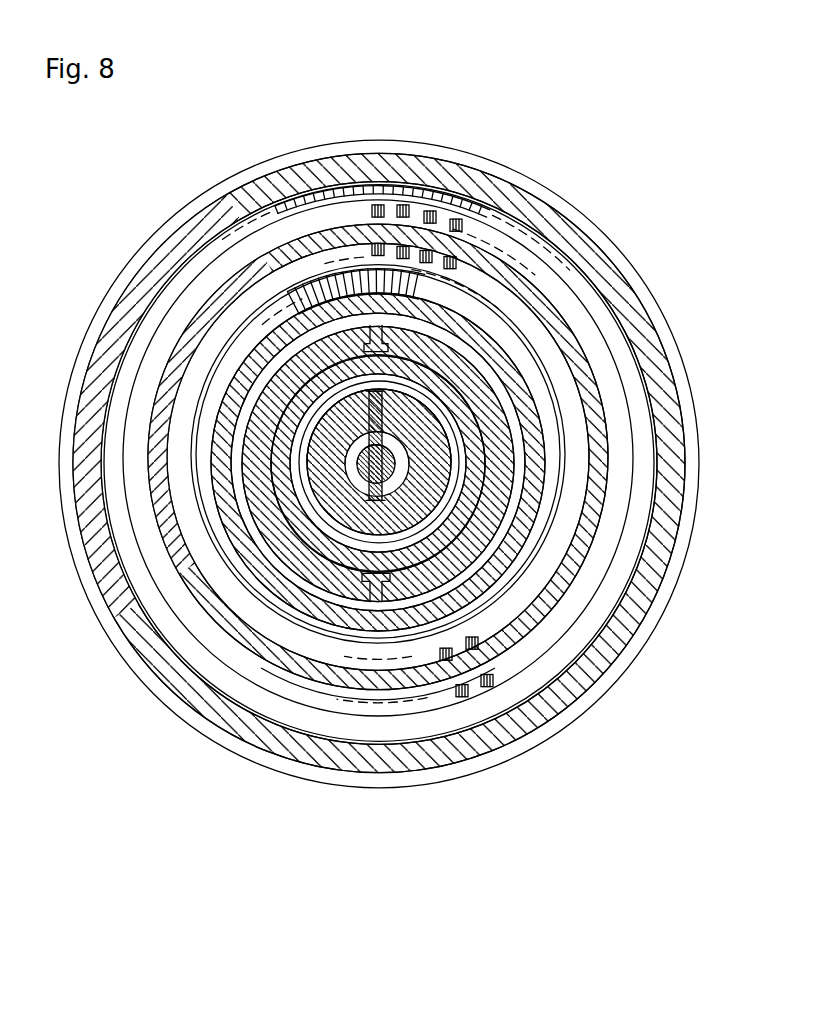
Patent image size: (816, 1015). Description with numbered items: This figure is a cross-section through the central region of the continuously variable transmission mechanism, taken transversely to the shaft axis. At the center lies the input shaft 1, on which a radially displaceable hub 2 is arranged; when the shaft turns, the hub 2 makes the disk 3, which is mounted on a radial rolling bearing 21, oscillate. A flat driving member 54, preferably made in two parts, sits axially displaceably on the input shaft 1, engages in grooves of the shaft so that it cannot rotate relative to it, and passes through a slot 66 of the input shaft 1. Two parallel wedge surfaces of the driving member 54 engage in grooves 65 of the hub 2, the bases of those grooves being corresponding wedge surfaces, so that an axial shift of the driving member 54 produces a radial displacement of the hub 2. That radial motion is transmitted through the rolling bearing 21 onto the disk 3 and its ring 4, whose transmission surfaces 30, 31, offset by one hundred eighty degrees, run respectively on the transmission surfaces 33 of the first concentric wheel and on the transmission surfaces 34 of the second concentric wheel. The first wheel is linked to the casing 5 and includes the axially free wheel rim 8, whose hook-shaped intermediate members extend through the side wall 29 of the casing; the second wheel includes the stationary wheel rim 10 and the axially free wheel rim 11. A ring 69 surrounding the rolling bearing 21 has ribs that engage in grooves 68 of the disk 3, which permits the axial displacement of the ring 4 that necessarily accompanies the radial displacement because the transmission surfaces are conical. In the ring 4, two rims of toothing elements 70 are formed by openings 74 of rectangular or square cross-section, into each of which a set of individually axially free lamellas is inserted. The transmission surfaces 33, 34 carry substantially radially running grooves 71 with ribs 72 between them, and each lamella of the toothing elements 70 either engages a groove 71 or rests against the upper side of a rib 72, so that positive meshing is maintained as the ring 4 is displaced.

The input shaft 1 is at (367, 466).
The hub 2 is at (237, 388).
The disk 3 is at (305, 570).
The ring 4 is at (522, 290).
The casing 5 is at (228, 715).
The axially free wheel rim 8 is at (398, 735).
The stationary wheel rim 10 is at (262, 510).
The axially free wheel rim 11 is at (215, 530).
The radial rolling bearing 21 is at (300, 407).
The side wall 29 is at (440, 160).
The transmission surface 30 is at (495, 240).
The transmission surface 31 is at (520, 315).
The transmission surface 33 is at (275, 290).
The transmission surface 34 is at (305, 297).
The flat driving member 54 is at (357, 452).
The grooves 65 is at (405, 398).
The slot 66 is at (340, 470).
The grooves 68 is at (380, 345).
The ring 69 is at (347, 433).
The toothing elements 70 is at (438, 260).
The grooves 71 is at (395, 190).
The ribs 72 is at (336, 190).
The openings 74 is at (462, 694).